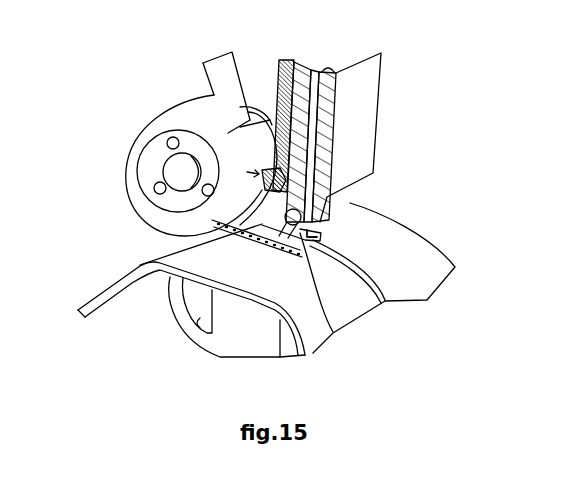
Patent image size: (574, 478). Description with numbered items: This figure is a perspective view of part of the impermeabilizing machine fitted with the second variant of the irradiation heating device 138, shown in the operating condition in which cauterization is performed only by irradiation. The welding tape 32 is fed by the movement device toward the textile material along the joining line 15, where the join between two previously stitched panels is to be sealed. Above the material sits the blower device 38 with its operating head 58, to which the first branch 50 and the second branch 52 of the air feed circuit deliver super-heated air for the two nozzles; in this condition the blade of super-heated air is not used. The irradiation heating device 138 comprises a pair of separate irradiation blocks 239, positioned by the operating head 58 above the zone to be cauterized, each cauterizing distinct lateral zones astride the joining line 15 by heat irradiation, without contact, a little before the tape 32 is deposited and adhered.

The joining line 15 is at (386, 301).
The impermeable welding tape 32 is at (220, 66).
The blower device 38 is at (360, 123).
The first branch 50 is at (330, 68).
The second branch 52 is at (307, 68).
The operating head 58 is at (357, 158).
The irradiation heating device 138 is at (255, 244).
The irradiation block 239 is at (318, 242).